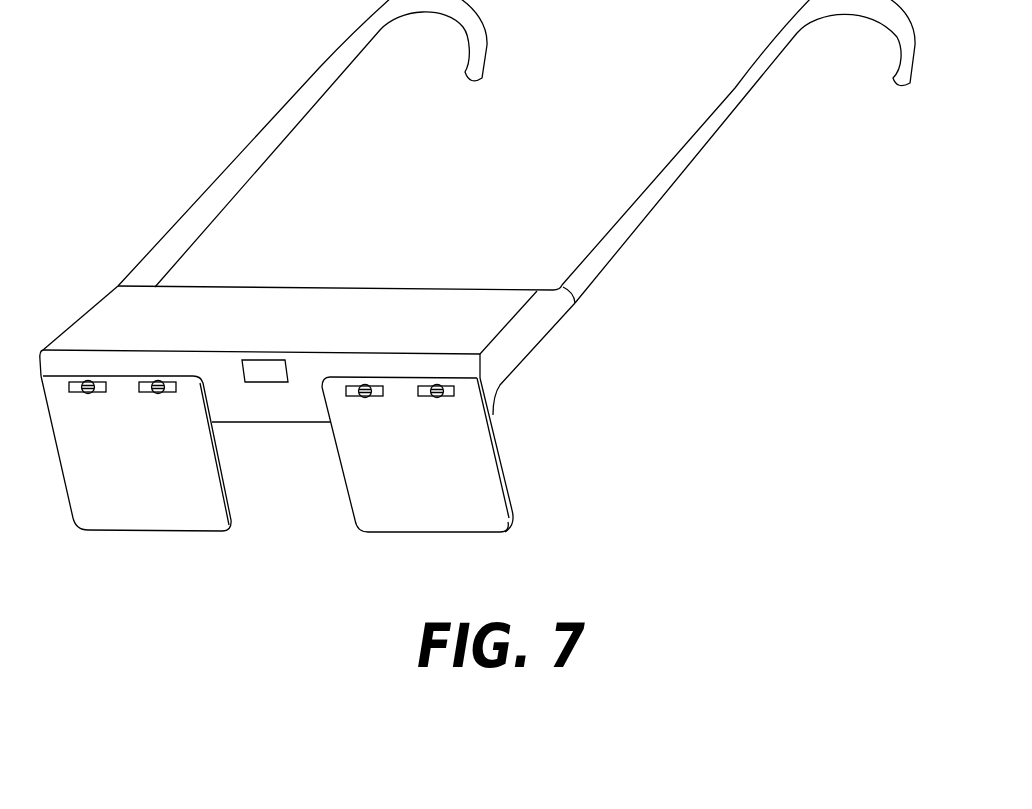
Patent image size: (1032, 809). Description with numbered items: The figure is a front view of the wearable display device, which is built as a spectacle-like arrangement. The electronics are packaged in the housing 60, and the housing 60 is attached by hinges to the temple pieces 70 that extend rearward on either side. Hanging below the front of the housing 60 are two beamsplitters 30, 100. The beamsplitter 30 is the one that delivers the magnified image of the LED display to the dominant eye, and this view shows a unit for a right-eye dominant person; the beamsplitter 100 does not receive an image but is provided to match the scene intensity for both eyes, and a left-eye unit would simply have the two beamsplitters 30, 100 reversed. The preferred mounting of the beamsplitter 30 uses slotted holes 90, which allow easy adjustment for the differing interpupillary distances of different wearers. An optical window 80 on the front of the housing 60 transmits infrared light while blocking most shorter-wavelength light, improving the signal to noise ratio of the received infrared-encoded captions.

The beamsplitter 30 is at (163, 513).
The housing 60 is at (118, 307).
The temple pieces 70 is at (577, 268).
The optical window 80 is at (268, 387).
The slotted holes 90 is at (452, 397).
The beamsplitter 100 is at (420, 517).